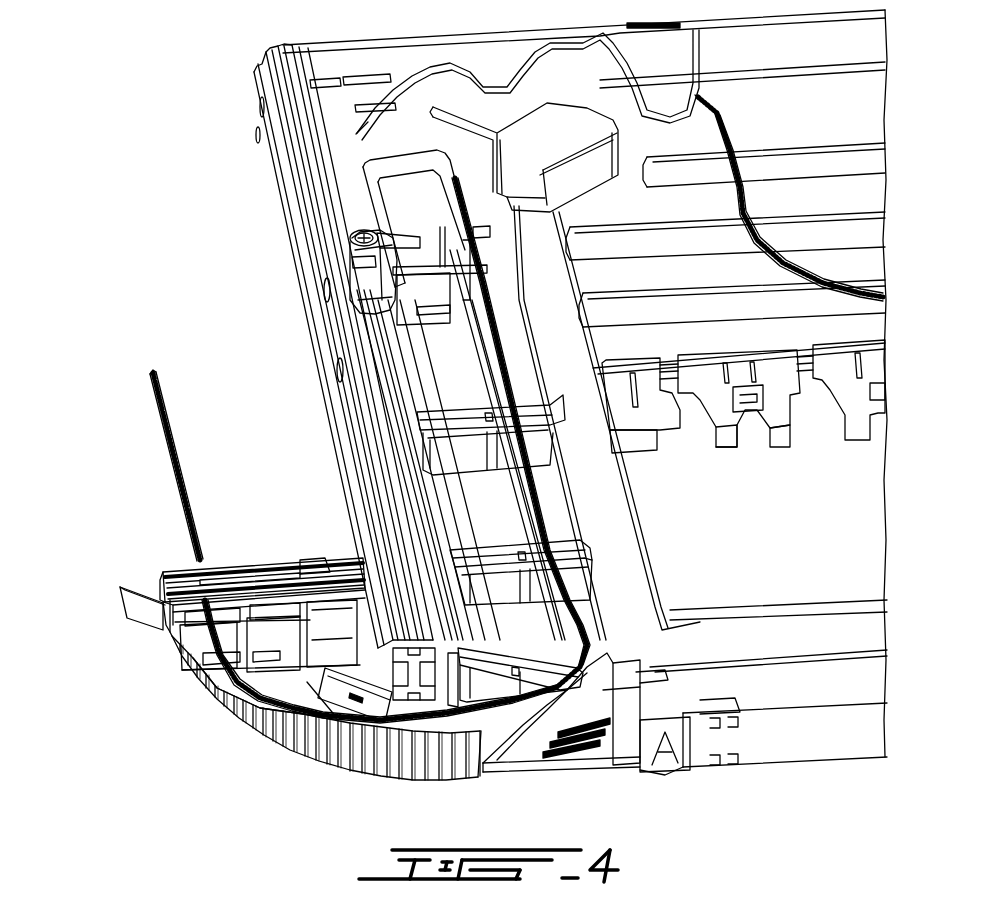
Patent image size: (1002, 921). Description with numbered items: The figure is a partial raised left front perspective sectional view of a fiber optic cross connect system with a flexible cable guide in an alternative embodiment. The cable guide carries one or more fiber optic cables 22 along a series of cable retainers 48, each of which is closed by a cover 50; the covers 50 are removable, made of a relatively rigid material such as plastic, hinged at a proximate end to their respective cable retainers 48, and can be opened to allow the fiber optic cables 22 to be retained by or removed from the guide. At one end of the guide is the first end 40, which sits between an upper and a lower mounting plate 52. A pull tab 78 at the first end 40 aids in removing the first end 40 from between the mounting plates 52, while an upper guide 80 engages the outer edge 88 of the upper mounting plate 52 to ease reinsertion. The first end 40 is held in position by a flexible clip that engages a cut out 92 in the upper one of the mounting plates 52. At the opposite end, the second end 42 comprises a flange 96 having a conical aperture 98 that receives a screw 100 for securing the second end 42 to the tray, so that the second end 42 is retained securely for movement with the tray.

The fiber optic cables 22 is at (124, 465).
The first end 40 is at (276, 690).
The second end 42 is at (326, 346).
The cable retainers 48 is at (704, 517).
The covers 50 is at (407, 479).
The mounting plates 52 is at (194, 658).
The pull tab 78 is at (88, 613).
The upper guide 80 is at (284, 532).
The outer edge 88 is at (164, 650).
The cut out 92 is at (429, 395).
The flange 96 is at (281, 265).
The conical aperture 98 is at (271, 157).
The screw 100 is at (247, 210).